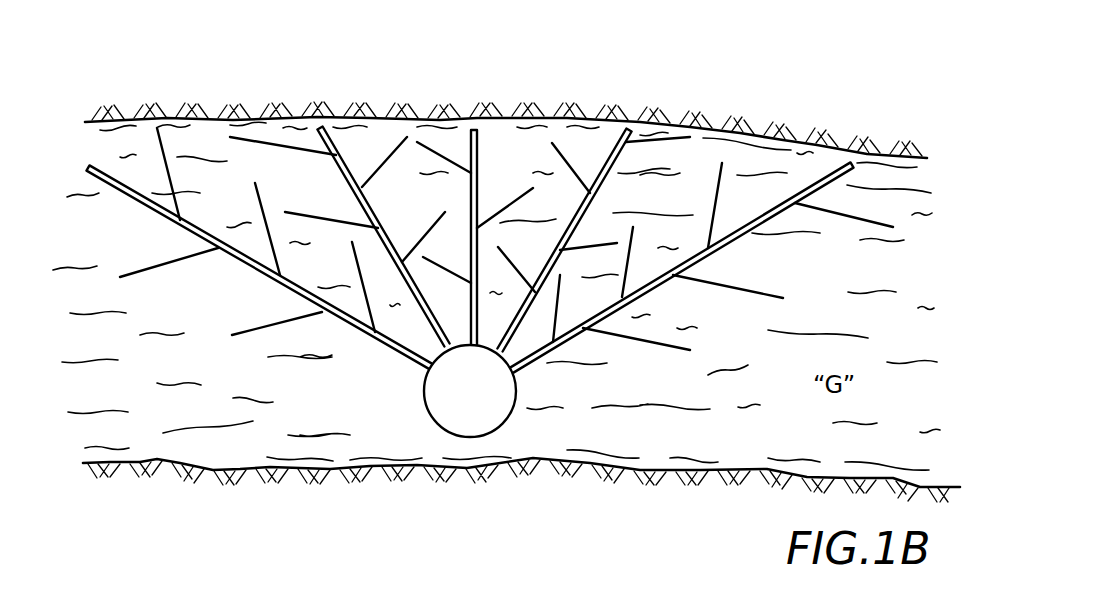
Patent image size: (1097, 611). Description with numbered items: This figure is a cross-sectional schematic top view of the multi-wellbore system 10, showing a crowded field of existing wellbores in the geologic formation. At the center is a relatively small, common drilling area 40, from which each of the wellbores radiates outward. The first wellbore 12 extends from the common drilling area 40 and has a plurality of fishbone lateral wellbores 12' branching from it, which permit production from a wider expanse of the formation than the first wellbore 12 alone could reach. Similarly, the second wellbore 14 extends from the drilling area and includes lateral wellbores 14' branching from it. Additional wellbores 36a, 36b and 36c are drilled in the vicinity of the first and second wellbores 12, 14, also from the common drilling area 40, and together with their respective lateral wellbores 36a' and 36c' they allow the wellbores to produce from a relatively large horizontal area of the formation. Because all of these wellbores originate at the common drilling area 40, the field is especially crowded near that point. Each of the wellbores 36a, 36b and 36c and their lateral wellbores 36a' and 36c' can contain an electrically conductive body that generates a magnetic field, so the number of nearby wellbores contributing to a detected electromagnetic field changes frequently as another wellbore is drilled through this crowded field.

The multi-wellbore system 10 is at (762, 68).
The first wellbore 12 is at (501, 200).
The lateral wellbores 12' is at (479, 212).
The second wellbore 14 is at (383, 202).
The lateral wellbore 14' is at (337, 199).
The additional wellbore 36a is at (237, 249).
The lateral wellbore 36a' is at (221, 231).
The additional wellbore 36b is at (618, 132).
The additional wellbore 36c is at (695, 229).
The lateral wellbore 36c' is at (723, 256).
The common drilling area 40 is at (423, 399).